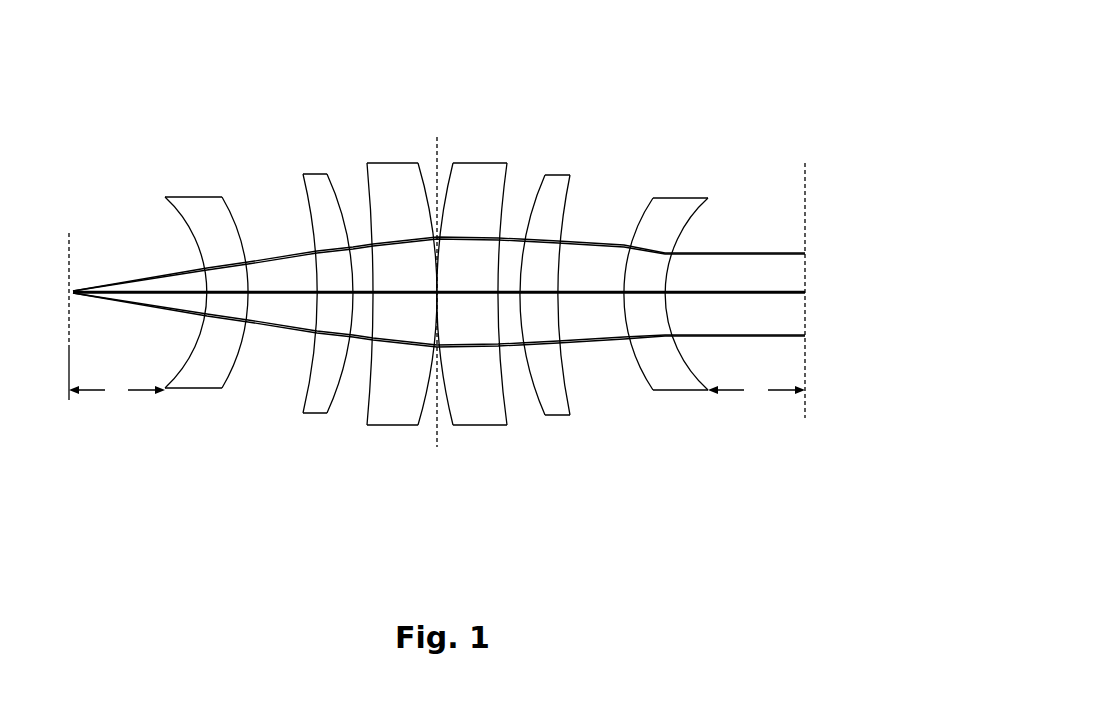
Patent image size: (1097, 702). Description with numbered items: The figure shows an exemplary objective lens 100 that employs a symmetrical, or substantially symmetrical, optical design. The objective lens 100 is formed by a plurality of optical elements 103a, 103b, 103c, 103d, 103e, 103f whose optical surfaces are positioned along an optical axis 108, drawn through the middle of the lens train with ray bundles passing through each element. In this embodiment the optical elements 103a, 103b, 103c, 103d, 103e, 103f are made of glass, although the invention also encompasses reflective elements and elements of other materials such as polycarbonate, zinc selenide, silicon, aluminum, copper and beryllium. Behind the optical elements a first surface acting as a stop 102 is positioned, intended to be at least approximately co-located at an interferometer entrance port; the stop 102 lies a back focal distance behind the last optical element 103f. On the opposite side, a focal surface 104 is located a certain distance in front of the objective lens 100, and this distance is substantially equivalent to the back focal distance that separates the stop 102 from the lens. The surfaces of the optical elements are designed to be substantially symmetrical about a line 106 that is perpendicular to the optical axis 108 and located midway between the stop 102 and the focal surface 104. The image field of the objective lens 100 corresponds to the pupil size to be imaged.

The objective lens 100 is at (656, 64).
The stop 102 is at (804, 418).
The optical element 103a is at (196, 197).
The optical element 103b is at (313, 174).
The optical element 103c is at (400, 162).
The optical element 103d is at (485, 162).
The optical element 103e is at (560, 175).
The optical element 103f is at (677, 198).
The focal surface 104 is at (70, 263).
The line 106 is at (437, 148).
The optical axis 108 is at (715, 293).